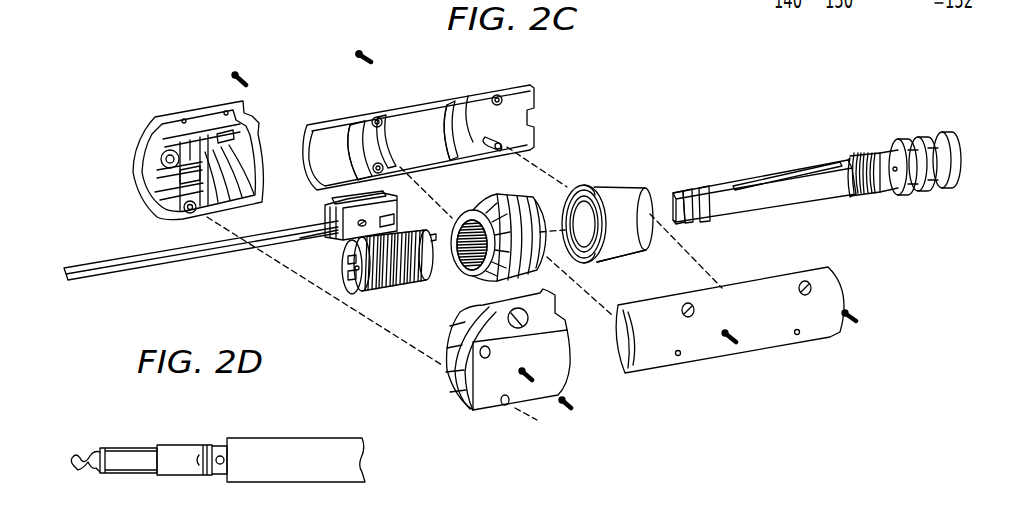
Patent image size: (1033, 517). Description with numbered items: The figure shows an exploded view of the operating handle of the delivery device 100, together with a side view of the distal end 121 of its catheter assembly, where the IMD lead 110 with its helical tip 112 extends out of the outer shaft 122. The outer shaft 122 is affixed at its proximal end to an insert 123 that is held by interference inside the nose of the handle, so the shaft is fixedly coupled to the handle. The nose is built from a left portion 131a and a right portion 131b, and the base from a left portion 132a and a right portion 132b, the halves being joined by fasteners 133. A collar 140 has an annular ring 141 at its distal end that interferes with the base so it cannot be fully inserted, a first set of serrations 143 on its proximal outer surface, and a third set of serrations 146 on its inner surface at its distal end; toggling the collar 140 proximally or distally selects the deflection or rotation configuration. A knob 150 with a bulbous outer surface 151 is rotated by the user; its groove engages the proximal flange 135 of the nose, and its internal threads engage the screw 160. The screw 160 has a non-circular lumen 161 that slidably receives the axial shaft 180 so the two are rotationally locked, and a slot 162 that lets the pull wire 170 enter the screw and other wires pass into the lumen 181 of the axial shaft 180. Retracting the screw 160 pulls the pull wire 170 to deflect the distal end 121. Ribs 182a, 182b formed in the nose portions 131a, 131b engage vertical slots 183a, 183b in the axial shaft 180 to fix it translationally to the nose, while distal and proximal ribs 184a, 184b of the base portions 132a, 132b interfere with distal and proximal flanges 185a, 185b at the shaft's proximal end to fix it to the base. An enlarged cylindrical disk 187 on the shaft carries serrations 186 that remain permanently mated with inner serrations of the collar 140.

In FIG. 2C, the delivery device 100 is at (146, 101).
In FIG. 2D, the IMD lead 110 is at (127, 475).
In FIG. 2D, the helical tip 112 is at (80, 448).
In FIG. 2D, the distal end 121 is at (286, 438).
In FIG. 2C, the outer shaft 122 is at (86, 280).
In FIG. 2C, the insert 123 is at (326, 211).
In FIG. 2C, the left portion of the nose 131a is at (186, 118).
In FIG. 2C, the right portion of the nose 131b is at (451, 388).
In FIG. 2C, the left portion of the base 132a is at (457, 94).
In FIG. 2C, the right portion of the base 132b is at (778, 348).
In FIG. 2C, the fasteners 133 is at (374, 53).
In FIG. 2C, the proximal flange 135 is at (241, 156).
In FIG. 2C, the collar 140 is at (619, 187).
In FIG. 2C, the annular ring 141 is at (615, 263).
In FIG. 2C, the first set of serrations 143 is at (672, 221).
In FIG. 2C, the third set of serrations 146 is at (575, 186).
In FIG. 2C, the knob 150 is at (483, 206).
In FIG. 2C, the bulbous outer surface 151 is at (550, 260).
In FIG. 2C, the screw 160 is at (390, 290).
In FIG. 2C, the non-circular lumen 161 is at (351, 293).
In FIG. 2C, the slot 162 is at (354, 270).
In FIG. 2C, the pull wire 170 is at (278, 247).
In FIG. 2C, the axial shaft 180 is at (752, 177).
In FIG. 2C, the lumen 181 is at (818, 162).
In FIG. 2C, the rib 182a is at (168, 191).
In FIG. 2C, the rib 182b is at (188, 212).
In FIG. 2C, the vertical slot 183a is at (681, 189).
In FIG. 2C, the vertical slot 183b is at (704, 186).
In FIG. 2C, the distal rib 184a is at (398, 130).
In FIG. 2C, the proximal rib 184b is at (451, 130).
In FIG. 2C, the distal flange 185a is at (887, 139).
In FIG. 2C, the proximal flange 185b is at (941, 132).
In FIG. 2C, the serrations 186 is at (874, 196).
In FIG. 2C, the enlarged cylindrical disk 187 is at (852, 198).